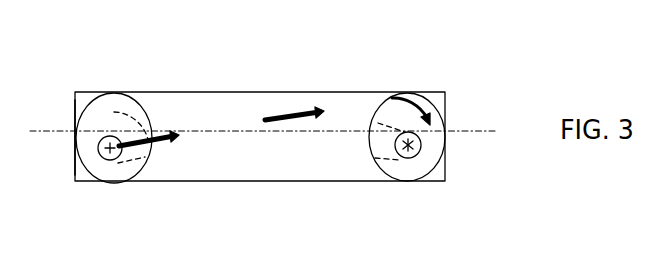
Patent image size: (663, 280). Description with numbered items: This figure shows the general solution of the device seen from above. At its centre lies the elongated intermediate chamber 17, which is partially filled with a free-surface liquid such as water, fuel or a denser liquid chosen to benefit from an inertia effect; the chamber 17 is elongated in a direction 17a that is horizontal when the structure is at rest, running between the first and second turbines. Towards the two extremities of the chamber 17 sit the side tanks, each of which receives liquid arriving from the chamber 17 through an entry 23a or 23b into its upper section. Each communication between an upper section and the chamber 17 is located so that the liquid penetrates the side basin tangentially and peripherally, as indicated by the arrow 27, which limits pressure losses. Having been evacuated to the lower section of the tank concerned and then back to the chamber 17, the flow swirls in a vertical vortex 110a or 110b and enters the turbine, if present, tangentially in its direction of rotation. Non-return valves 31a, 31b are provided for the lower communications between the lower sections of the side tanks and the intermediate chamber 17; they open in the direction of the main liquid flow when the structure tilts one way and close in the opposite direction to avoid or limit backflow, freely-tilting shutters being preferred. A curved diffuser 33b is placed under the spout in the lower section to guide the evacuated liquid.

The intermediate chamber 17 is at (232, 107).
The elongation direction of the intermediate chamber 17a is at (33, 128).
The first entry 23a is at (118, 104).
The second entry 23b is at (408, 93).
The arrow indicating tangential liquid entry 27 is at (396, 98).
The first lower non-return valve 31a is at (150, 150).
The second lower non-return valve 31b is at (373, 138).
The curved diffuser 33b is at (130, 162).
The first vertical vortex 110a is at (110, 150).
The second vertical vortex 110b is at (410, 150).